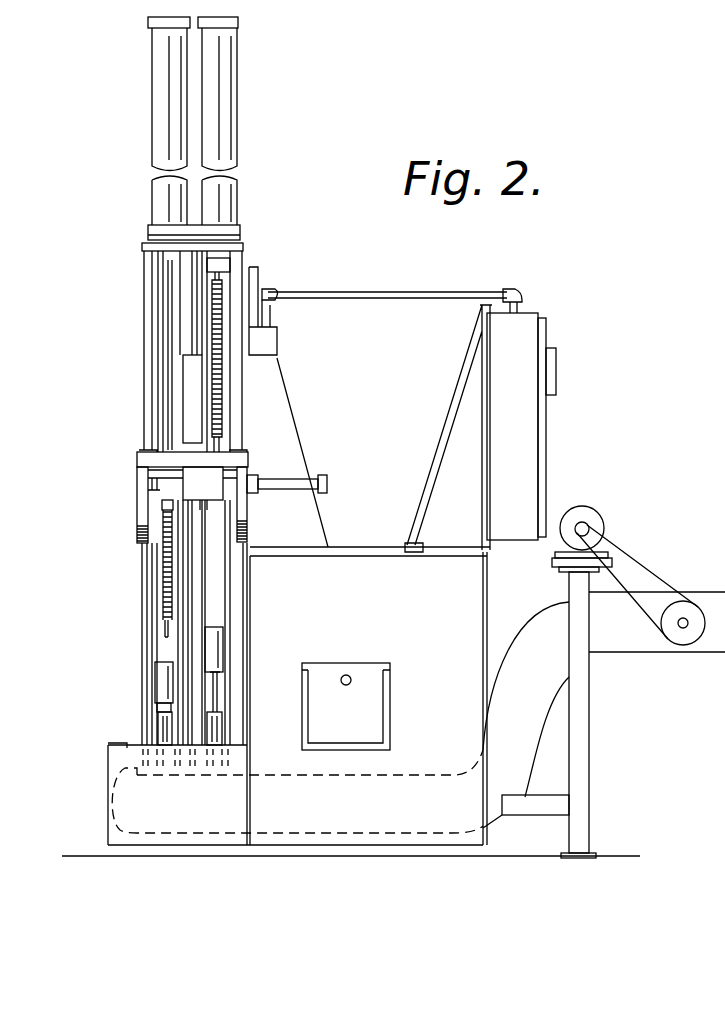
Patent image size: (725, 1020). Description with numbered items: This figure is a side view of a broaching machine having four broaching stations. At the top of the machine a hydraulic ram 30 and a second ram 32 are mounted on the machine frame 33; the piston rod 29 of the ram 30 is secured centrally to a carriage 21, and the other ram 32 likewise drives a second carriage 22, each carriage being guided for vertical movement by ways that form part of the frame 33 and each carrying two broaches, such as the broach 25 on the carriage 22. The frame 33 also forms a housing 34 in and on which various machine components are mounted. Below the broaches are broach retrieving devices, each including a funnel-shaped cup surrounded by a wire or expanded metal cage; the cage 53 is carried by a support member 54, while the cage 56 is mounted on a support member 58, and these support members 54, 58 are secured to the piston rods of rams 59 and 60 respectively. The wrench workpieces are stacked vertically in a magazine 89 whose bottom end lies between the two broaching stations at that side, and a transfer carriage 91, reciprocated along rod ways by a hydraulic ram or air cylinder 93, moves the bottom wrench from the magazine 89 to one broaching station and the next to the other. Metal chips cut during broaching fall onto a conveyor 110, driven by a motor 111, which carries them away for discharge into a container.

The carriage 21 is at (157, 434).
The carriage 22 is at (223, 265).
The broach 25 is at (222, 377).
The piston rod 29 is at (168, 333).
The hydraulic ram 30 is at (160, 183).
The ram 32 is at (232, 188).
The machine frame 33 is at (131, 567).
The housing 34 is at (410, 624).
The cage 53 is at (220, 643).
The support member 54 is at (215, 672).
The cage 56 is at (160, 681).
The support member 58 is at (160, 703).
The ram 59 is at (215, 727).
The ram 60 is at (162, 728).
The magazine 89 is at (177, 398).
The transfer carriage 91 is at (215, 502).
The hydraulic ram or air cylinder 93 is at (293, 480).
The conveyor 110 is at (637, 643).
The motor 111 is at (597, 520).